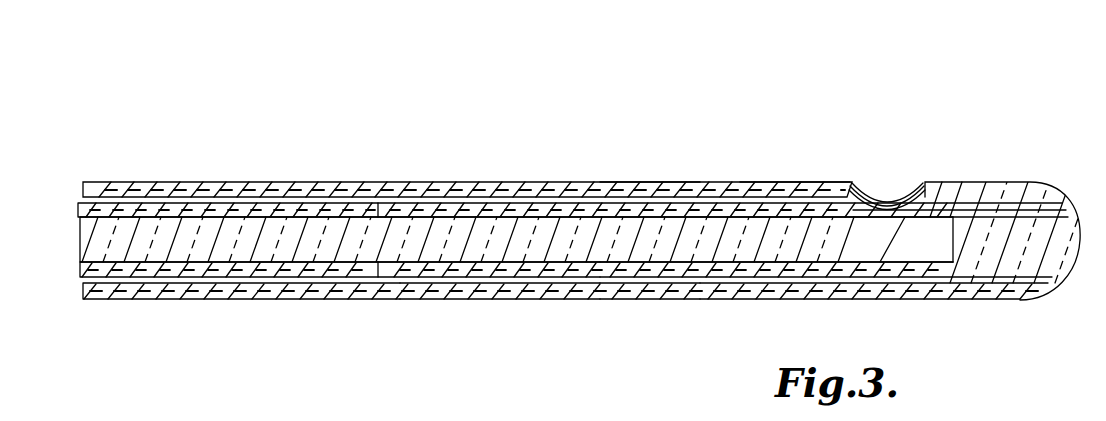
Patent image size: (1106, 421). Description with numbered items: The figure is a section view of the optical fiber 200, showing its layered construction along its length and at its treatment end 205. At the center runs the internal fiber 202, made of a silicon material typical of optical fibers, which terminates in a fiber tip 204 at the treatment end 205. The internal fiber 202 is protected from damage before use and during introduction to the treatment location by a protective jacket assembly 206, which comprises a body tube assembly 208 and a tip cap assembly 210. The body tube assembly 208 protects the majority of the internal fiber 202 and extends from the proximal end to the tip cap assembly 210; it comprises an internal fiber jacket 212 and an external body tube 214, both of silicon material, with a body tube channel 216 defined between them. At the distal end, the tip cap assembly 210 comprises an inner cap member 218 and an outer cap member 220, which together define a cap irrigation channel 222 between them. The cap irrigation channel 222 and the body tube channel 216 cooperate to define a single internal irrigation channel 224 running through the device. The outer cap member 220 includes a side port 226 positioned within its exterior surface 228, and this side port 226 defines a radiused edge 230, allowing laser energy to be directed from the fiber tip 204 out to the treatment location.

The optical fiber 200 is at (708, 134).
The internal fiber 202 is at (454, 228).
The fiber tip 204 is at (900, 243).
The treatment end 205 is at (1078, 232).
The protective jacket assembly 206 is at (378, 203).
The body tube assembly 208 is at (221, 181).
The tip cap assembly 210 is at (646, 182).
The internal fiber jacket 212 is at (185, 283).
The external body tube 214 is at (284, 263).
The body tube channel 216 is at (378, 280).
The inner cap member 218 is at (544, 290).
The outer cap member 220 is at (648, 275).
The cap irrigation channel 222 is at (760, 275).
The internal irrigation channel 224 is at (455, 270).
The side port 226 is at (860, 193).
The exterior surface 228 is at (775, 182).
The radiused edge 230 is at (905, 193).